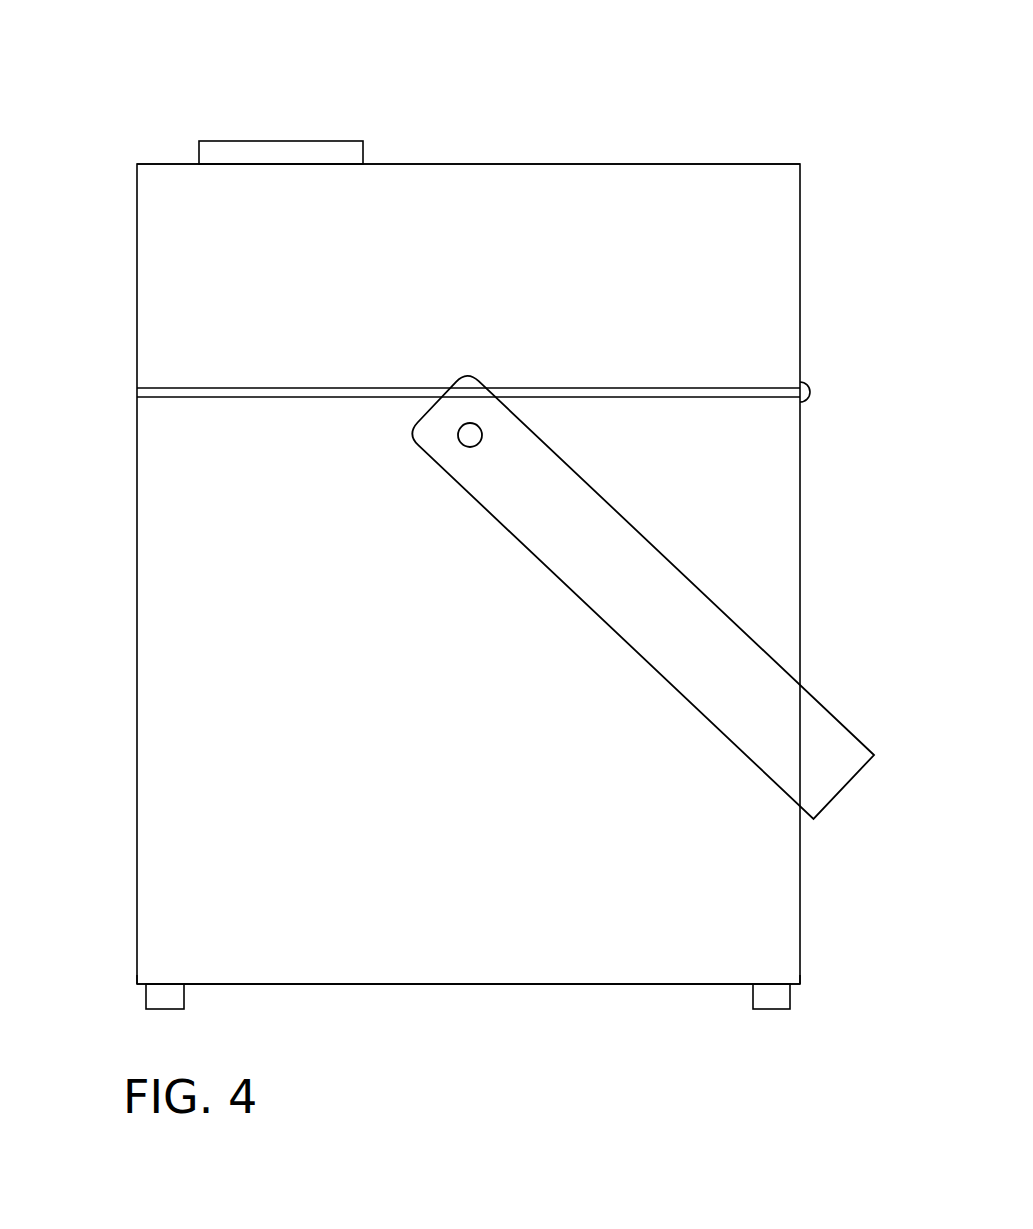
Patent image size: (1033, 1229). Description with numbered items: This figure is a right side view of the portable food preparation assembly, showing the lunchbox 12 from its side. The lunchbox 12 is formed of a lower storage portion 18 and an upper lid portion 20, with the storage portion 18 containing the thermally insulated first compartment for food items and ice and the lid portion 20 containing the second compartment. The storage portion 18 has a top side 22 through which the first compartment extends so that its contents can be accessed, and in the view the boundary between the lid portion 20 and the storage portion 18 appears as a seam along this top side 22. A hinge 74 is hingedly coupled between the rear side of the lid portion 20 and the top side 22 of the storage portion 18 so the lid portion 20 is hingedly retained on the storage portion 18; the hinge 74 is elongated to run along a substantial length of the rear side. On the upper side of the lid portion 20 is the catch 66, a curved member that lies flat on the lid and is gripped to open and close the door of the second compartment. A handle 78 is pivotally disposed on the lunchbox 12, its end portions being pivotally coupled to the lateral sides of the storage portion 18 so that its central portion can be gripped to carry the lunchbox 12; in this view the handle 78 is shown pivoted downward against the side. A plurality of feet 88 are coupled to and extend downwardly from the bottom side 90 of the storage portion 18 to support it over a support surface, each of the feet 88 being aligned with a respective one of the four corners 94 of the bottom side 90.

The lunchbox 12 is at (795, 150).
The storage portion 18 is at (806, 505).
The lid portion 20 is at (805, 243).
The top side 22 is at (254, 397).
The catch 66 is at (342, 141).
The hinge 74 is at (812, 392).
The handle 78 is at (851, 747).
The feet 88 is at (165, 1010).
The bottom side 90 is at (585, 985).
The corners 94 is at (138, 985).